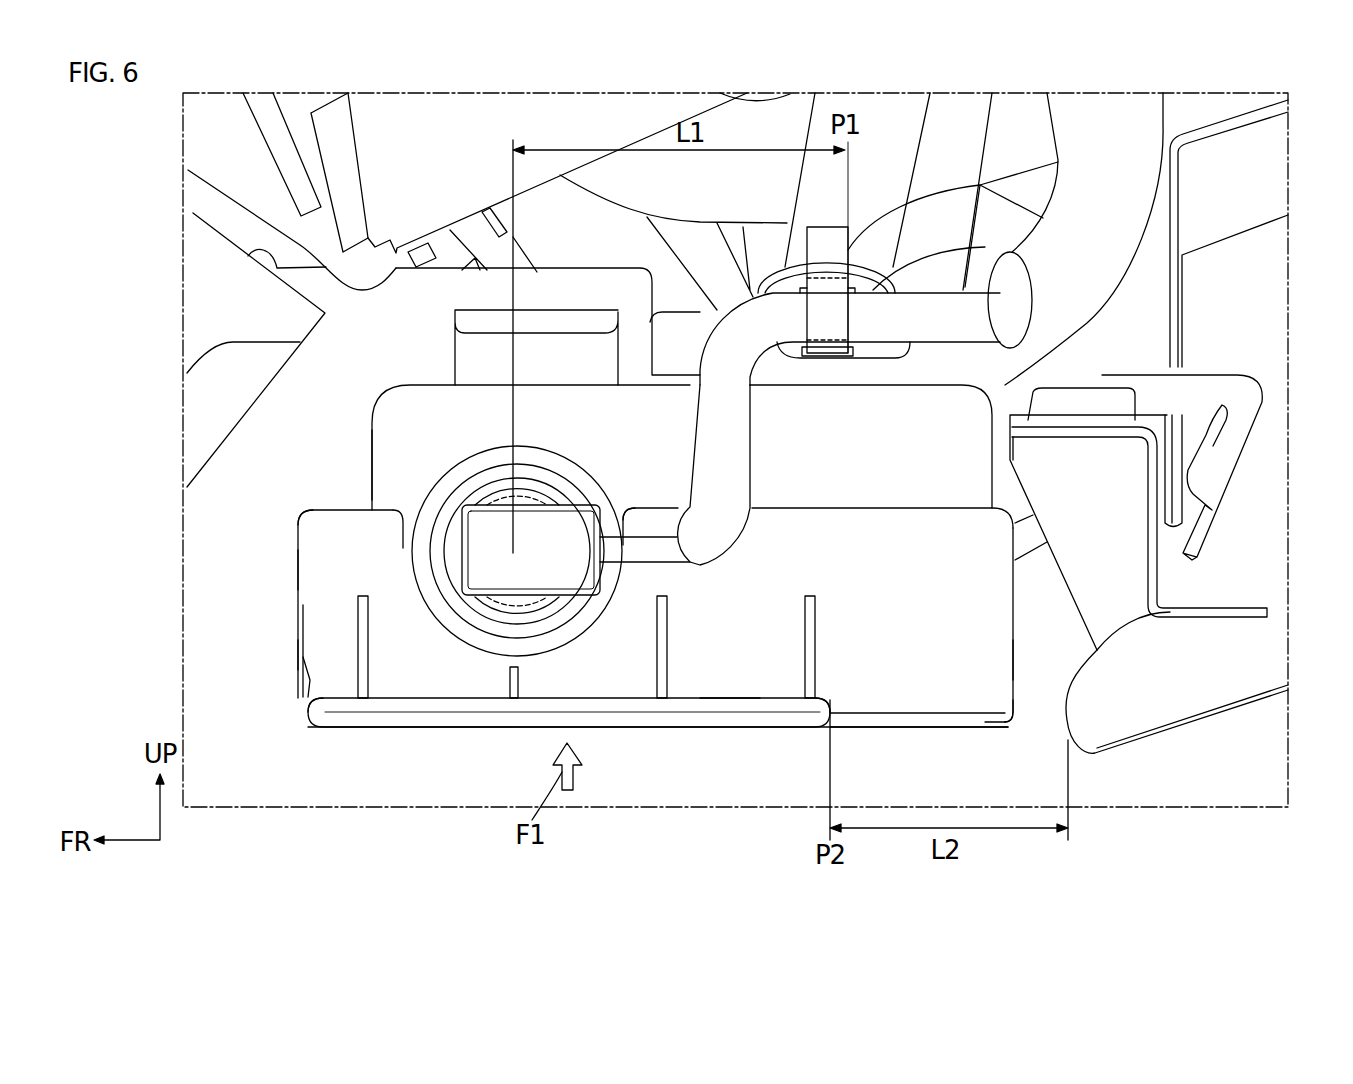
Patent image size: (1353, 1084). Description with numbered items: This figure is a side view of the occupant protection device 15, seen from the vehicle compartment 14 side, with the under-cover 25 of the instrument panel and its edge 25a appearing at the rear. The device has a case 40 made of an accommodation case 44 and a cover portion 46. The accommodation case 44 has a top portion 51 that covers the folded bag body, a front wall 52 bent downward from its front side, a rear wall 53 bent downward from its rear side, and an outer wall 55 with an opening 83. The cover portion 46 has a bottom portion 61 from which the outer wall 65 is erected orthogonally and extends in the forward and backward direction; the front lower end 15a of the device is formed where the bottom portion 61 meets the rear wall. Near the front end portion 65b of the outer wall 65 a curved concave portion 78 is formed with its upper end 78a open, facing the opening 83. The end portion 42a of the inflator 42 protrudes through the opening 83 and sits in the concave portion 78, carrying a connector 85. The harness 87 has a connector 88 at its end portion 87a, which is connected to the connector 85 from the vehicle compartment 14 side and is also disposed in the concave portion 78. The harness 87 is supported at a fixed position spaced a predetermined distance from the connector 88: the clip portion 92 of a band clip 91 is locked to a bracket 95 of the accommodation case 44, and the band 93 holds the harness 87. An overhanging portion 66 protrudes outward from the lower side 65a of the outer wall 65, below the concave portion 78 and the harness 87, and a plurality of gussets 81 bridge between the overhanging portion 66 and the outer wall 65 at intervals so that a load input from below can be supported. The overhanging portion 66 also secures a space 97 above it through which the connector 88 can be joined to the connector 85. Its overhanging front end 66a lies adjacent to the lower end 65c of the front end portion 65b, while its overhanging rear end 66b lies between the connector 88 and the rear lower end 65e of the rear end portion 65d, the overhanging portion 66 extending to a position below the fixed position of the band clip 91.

The vehicle compartment 14 is at (680, 790).
The occupant protection device 15 is at (298, 512).
The front lower end 15a is at (1017, 757).
The under-cover 25 is at (1240, 700).
The cross member lower edge 25a is at (1090, 748).
The case 40 is at (298, 567).
The inflator 42 is at (480, 479).
The end portion of the inflator 42a is at (482, 465).
The accommodation case 44 is at (372, 429).
The cover portion 46 is at (298, 655).
The top portion 51 is at (578, 375).
The front wall 52 is at (372, 455).
The rear wall 53 is at (995, 457).
The outer wall 55 is at (867, 438).
The bottom portion 61 is at (852, 720).
The outer wall 65 is at (968, 588).
The lower side of the outer wall 65a is at (730, 693).
The front end portion of the outer wall 65b is at (303, 658).
The lower end of the front end portion 65c is at (317, 705).
The rear end portion of the outer wall 65d is at (998, 654).
The rear lower end 65e is at (992, 722).
The overhanging portion 66 is at (527, 727).
The overhanging front end 66a is at (305, 708).
The overhanging rear end 66b is at (830, 700).
The concave portion 78 is at (447, 632).
The upper end of the concave portion 78a is at (628, 510).
The gussets 81 is at (356, 615).
The opening 83 is at (549, 451).
The connector 85 is at (500, 497).
The harness 87 is at (745, 433).
The end portion of the harness 87a is at (614, 560).
The connector 88 is at (487, 547).
The band clip 91 is at (1105, 170).
The clip portion 92 is at (937, 255).
The band 93 is at (985, 187).
The bracket 95 is at (772, 280).
The space 97 is at (480, 690).